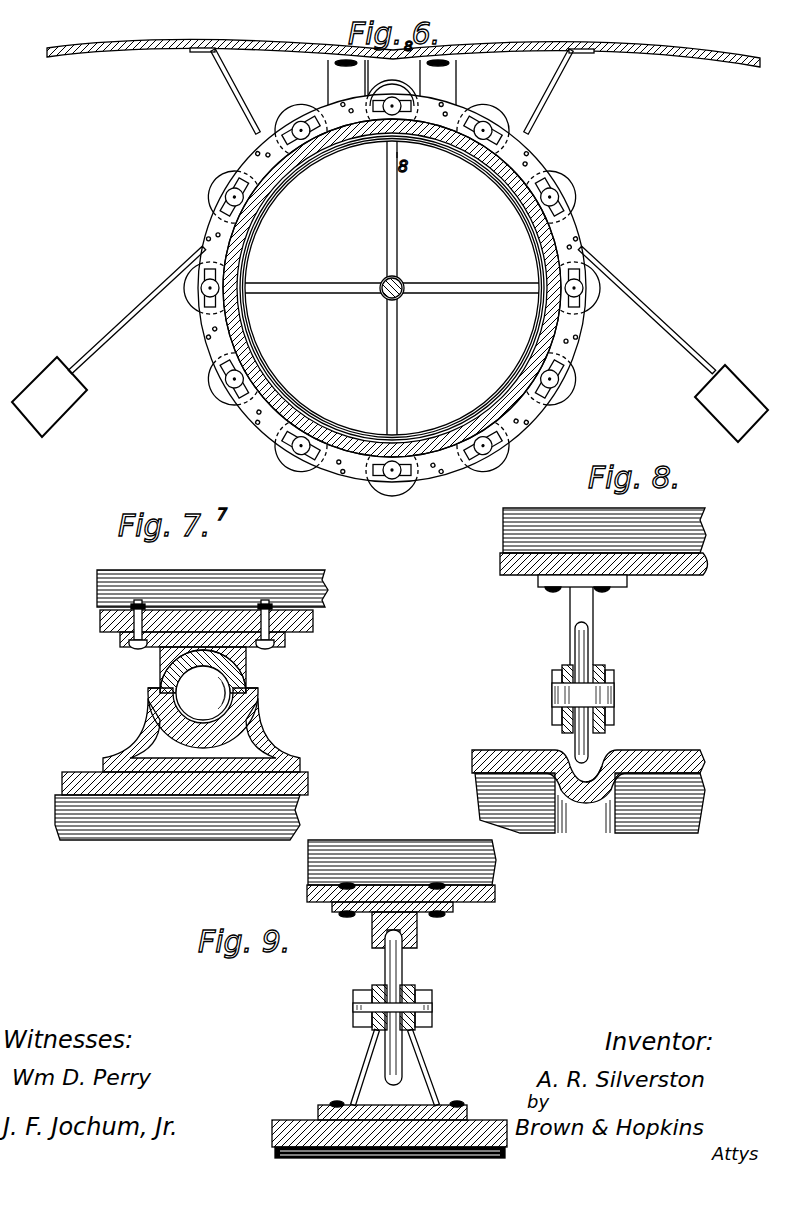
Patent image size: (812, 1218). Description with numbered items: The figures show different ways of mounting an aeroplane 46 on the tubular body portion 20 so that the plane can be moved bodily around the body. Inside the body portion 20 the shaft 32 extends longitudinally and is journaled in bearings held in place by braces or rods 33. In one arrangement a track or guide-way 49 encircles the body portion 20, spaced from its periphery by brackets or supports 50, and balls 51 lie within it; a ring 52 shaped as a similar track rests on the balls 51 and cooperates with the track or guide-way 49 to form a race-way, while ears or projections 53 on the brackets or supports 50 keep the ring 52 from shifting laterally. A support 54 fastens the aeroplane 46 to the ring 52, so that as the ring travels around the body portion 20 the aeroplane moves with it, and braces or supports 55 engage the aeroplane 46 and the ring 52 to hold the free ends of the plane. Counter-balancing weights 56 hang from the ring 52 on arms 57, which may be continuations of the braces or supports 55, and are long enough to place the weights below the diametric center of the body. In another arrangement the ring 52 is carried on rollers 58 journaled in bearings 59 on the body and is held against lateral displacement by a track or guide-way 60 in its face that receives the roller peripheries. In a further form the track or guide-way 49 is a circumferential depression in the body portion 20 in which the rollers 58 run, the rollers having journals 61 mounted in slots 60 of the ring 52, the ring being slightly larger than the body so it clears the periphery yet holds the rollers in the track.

In FIG. 6, the tubular body portion 20 is at (528, 360).
In FIG. 7, the tubular body portion 20 is at (175, 790).
In FIG. 8, the tubular body portion 20 is at (690, 752).
In FIG. 9, the tubular body portion 20 is at (485, 1120).
In FIG. 6, the shaft 32 is at (382, 293).
In FIG. 6, the braces or rods 33 is at (346, 286).
In FIG. 6, the aeroplane 46 is at (300, 38).
In FIG. 7, the aeroplane 46 is at (256, 578).
In FIG. 8, the aeroplane 46 is at (685, 568).
In FIG. 9, the aeroplane 46 is at (408, 850).
In FIG. 6, the track or guide-way 49 is at (513, 167).
In FIG. 7, the track or guide-way 49 is at (240, 712).
In FIG. 8, the track or guide-way 49 is at (614, 758).
In FIG. 7, the brackets or supports 50 is at (292, 765).
In FIG. 7, the balls 51 is at (190, 690).
In FIG. 6, the ring 52 is at (577, 236).
In FIG. 7, the ring 52 is at (172, 668).
In FIG. 8, the ring 52 is at (565, 672).
In FIG. 9, the ring 52 is at (418, 937).
In FIG. 7, the ears or projections 53 is at (160, 687).
In FIG. 6, the support 54 is at (338, 72).
In FIG. 7, the support 54 is at (155, 652).
In FIG. 8, the support 54 is at (578, 603).
In FIG. 6, the braces or supports 55 is at (246, 107).
In FIG. 6, the counter-balancing weights 56 is at (53, 370).
In FIG. 6, the arms 57 is at (140, 305).
In FIG. 6, the rollers 58 is at (392, 98).
In FIG. 8, the rollers 58 is at (591, 660).
In FIG. 9, the rollers 58 is at (401, 978).
In FIG. 9, the bearings 59 is at (425, 1073).
In FIG. 6, the track or guide-way / slots 60 is at (420, 102).
In FIG. 9, the track or guide-way / slots 60 is at (412, 945).
In FIG. 8, the journals 61 is at (606, 700).